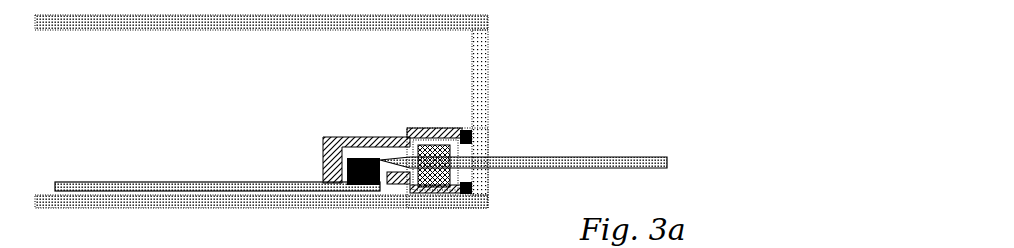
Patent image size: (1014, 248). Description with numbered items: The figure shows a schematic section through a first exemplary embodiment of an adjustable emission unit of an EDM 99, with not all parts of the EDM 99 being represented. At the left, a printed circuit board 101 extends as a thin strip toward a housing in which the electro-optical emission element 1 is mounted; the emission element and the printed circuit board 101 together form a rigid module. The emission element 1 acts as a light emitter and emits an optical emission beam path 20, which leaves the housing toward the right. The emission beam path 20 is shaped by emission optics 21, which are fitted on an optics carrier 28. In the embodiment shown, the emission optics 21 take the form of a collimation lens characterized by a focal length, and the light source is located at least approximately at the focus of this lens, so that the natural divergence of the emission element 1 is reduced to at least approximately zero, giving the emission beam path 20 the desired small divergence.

The EDM 99 is at (603, 29).
The printed circuit board 101 is at (217, 165).
The electro-optical emission element 1 is at (444, 112).
The optics carrier 28 is at (491, 141).
The emission optics 21 is at (516, 148).
The optical emission beam path 20 is at (529, 136).